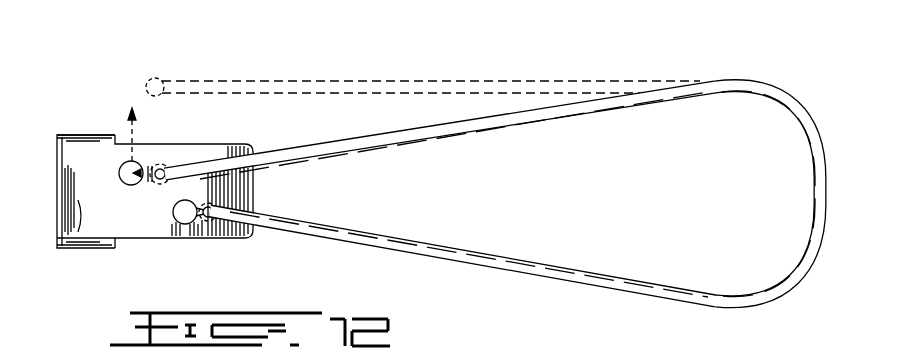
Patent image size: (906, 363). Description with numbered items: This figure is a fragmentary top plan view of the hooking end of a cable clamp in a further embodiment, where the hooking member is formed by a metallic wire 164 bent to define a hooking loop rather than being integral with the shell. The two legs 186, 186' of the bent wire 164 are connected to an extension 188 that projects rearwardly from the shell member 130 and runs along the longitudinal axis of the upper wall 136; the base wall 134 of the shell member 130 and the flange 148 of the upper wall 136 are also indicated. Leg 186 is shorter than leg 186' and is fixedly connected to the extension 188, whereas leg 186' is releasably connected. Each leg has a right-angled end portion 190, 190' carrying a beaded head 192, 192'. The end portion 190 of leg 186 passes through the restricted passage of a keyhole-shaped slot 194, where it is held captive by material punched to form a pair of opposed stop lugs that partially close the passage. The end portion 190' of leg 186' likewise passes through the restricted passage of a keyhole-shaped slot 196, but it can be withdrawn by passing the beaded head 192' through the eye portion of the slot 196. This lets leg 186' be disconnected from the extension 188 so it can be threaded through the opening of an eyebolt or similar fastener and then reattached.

The shell member 130 is at (70, 128).
The base wall 134 is at (93, 133).
The upper wall 136 is at (77, 235).
The flange 148 is at (90, 250).
The metallic wire 164 is at (792, 100).
The leg 186 is at (463, 275).
The leg 186' is at (440, 130).
The extension 188 is at (143, 213).
The end portion 190 is at (247, 204).
The end portion 190' is at (227, 146).
The beaded head 192 is at (262, 242).
The beaded head 192' is at (423, 102).
The keyhole-shaped slot 194 is at (193, 238).
The keyhole-shaped slot 196 is at (140, 163).